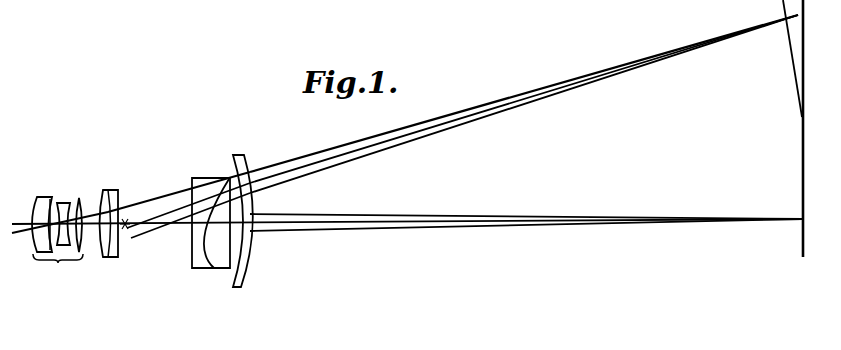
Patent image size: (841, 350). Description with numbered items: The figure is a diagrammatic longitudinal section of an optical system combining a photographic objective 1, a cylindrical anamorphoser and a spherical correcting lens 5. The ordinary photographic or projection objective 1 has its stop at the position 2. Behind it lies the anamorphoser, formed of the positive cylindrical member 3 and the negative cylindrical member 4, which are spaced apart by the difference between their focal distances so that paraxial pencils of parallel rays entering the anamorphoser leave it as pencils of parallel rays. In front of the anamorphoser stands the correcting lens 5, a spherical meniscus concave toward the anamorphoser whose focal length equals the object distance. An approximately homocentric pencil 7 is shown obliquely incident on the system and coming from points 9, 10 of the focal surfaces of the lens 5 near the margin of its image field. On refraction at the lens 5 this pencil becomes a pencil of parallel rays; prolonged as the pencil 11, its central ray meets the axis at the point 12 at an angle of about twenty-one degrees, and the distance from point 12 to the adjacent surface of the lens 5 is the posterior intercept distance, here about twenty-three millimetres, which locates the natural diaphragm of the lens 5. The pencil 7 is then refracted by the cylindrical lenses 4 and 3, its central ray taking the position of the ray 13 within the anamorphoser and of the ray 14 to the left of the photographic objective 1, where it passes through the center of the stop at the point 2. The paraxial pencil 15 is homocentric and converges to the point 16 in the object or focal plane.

The photographic objective 1 is at (57, 218).
The stop position 2 is at (47, 207).
The positive cylindrical member 3 is at (108, 237).
The negative cylindrical member 4 is at (211, 236).
The correcting lens 5 is at (267, 307).
The oblique pencil 7 is at (477, 116).
The focal surface point 9 is at (798, 20).
The focal surface point 10 is at (787, 17).
The prolonged parallel pencil 11 is at (126, 231).
The axial intercept point 12 is at (150, 212).
The central ray within anamorphoser 13 is at (149, 203).
The central ray left of photographic objective 14 is at (22, 235).
The paraxial pencil 15 is at (475, 222).
The convergence point 16 is at (800, 224).